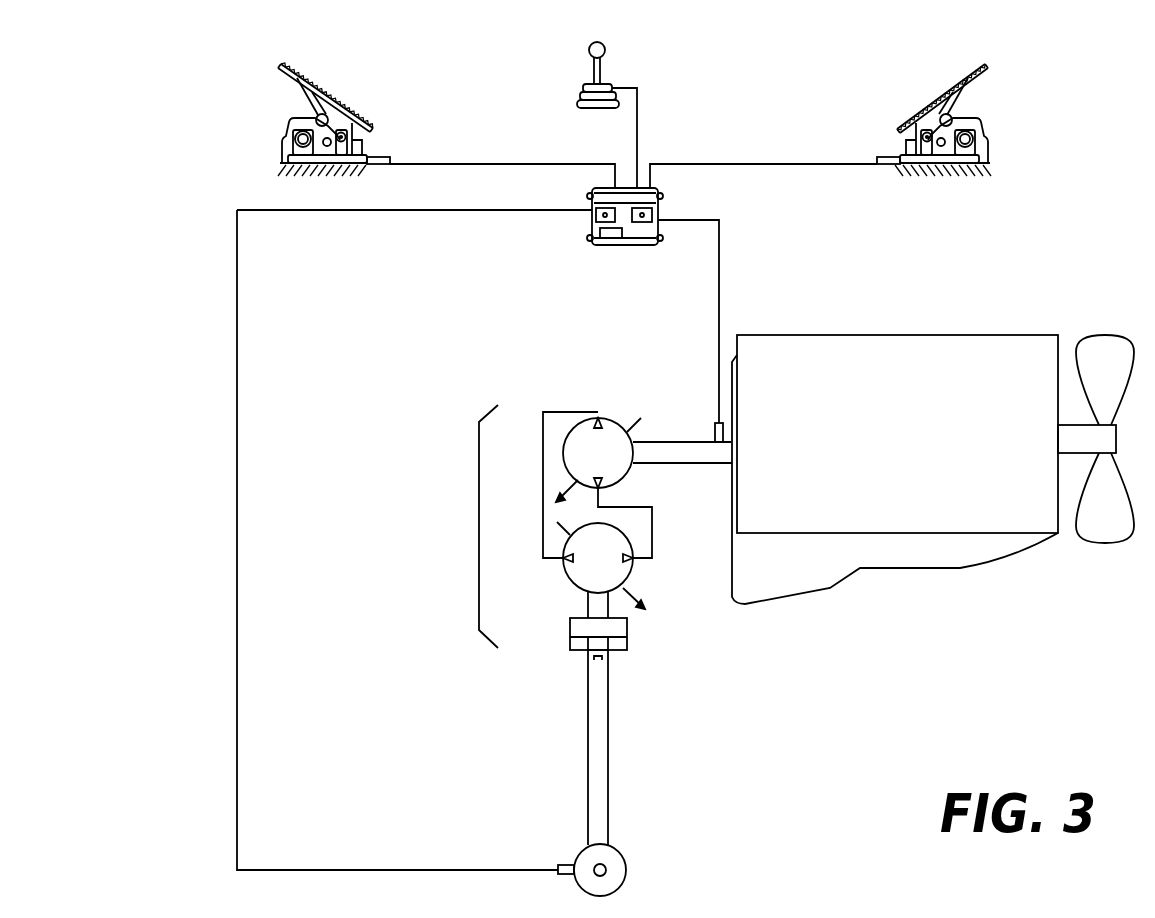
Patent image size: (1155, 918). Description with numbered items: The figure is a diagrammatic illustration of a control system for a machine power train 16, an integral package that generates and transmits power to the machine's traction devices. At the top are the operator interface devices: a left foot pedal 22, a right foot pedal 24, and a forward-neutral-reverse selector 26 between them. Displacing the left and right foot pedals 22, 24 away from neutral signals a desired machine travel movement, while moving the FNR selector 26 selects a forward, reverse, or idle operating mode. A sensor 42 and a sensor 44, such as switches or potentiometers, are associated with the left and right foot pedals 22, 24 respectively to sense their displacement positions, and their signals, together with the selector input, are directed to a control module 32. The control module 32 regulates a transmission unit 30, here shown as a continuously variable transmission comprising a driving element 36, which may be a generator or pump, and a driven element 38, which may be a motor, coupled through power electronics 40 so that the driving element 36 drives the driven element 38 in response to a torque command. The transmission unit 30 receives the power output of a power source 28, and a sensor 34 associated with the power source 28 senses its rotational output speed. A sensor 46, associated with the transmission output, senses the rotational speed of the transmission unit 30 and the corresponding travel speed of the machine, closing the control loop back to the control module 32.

The power train 16 is at (118, 158).
The left foot pedal 22 is at (334, 100).
The right foot pedal 24 is at (987, 70).
The forward-neutral-reverse (FNR) selector 26 is at (605, 40).
The power source 28 is at (883, 469).
The transmission unit 30 is at (479, 520).
The control module 32 is at (660, 210).
The sensor 34 is at (717, 423).
The driving element 36 is at (566, 462).
The driven element 38 is at (632, 546).
The power electronics 40 is at (558, 412).
The sensor 42 is at (380, 157).
The sensor 44 is at (880, 157).
The sensor 46 is at (558, 866).